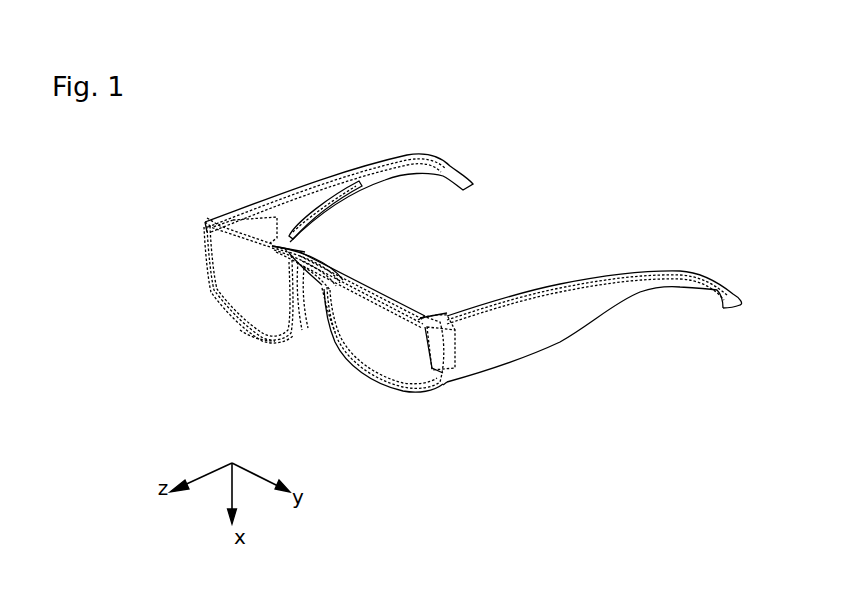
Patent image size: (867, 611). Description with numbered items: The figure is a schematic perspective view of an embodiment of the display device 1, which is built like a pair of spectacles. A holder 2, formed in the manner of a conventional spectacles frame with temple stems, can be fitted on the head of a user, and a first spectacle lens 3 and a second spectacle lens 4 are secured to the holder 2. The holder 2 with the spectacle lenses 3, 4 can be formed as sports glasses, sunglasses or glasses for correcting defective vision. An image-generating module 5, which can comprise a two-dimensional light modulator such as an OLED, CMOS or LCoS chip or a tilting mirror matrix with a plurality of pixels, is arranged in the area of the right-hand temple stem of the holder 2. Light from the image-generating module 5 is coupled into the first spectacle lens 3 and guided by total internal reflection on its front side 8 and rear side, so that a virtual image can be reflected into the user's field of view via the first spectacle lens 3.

The display device 1 is at (277, 385).
The holder 2 is at (365, 166).
The first spectacle lens 3 is at (260, 337).
The second spectacle lens 4 is at (370, 382).
The image-generating module 5 is at (262, 222).
The front side 8 is at (235, 302).